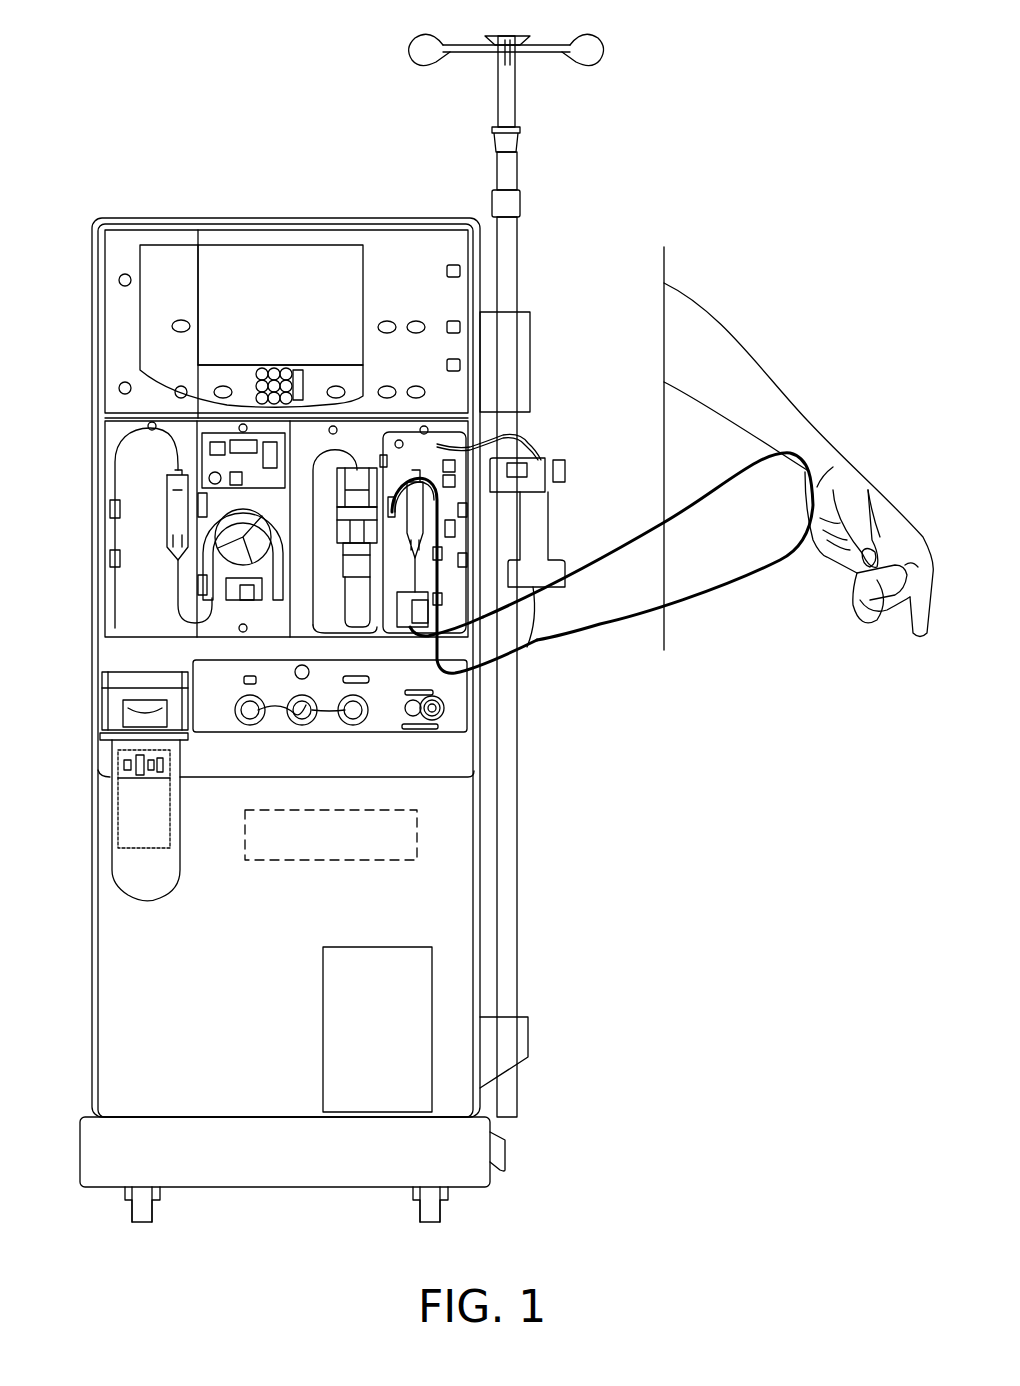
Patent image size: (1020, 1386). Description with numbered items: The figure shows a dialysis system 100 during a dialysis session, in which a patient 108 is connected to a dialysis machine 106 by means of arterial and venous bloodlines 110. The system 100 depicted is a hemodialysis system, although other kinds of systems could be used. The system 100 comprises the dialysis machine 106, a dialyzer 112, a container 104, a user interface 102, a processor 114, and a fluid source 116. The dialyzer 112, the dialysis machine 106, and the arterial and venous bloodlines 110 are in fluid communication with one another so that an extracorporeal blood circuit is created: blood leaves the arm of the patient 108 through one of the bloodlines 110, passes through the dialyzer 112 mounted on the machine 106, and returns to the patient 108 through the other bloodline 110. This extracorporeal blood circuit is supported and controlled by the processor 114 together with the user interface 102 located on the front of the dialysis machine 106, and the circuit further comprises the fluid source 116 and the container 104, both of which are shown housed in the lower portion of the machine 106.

The dialysis system 100 is at (658, 128).
The user interface 102 is at (220, 310).
The container 104 is at (131, 826).
The dialysis machine 106 is at (372, 628).
The patient 108 is at (771, 400).
The arterial and venous bloodlines 110 is at (603, 562).
The dialyzer 112 is at (563, 477).
The processor 114 is at (400, 833).
The fluid source 116 is at (410, 997).